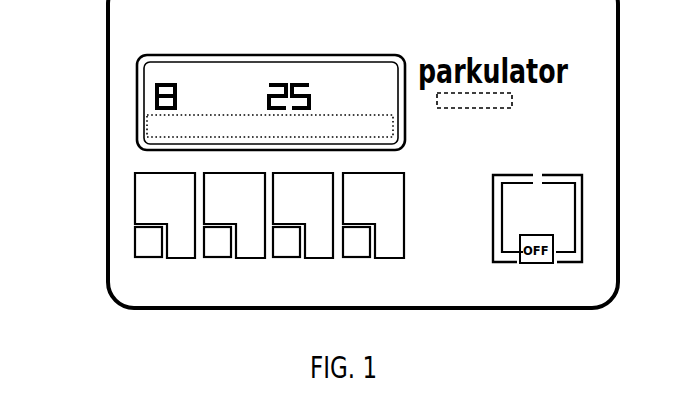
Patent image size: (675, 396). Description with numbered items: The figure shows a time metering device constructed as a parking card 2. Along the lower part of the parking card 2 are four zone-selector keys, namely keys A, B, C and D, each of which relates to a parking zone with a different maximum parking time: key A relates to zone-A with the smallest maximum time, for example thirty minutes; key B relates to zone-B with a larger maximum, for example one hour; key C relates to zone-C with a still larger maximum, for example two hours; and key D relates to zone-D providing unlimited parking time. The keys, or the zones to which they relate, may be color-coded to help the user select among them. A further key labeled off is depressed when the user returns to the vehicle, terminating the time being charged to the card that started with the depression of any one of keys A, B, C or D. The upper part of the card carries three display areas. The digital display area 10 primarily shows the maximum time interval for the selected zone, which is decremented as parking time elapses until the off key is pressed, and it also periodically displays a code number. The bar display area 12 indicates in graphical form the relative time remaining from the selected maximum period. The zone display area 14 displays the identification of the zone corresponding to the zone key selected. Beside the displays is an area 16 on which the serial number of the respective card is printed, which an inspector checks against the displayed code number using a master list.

The parking card 2 is at (104, 283).
The digital display area 10 is at (328, 92).
The bar display area 12 is at (227, 127).
The zone display area 14 is at (152, 97).
The serial number area 16 is at (467, 111).
The zone-selector key A is at (148, 258).
The zone-selector key B is at (217, 258).
The zone-selector key C is at (287, 258).
The zone-selector key D is at (357, 258).